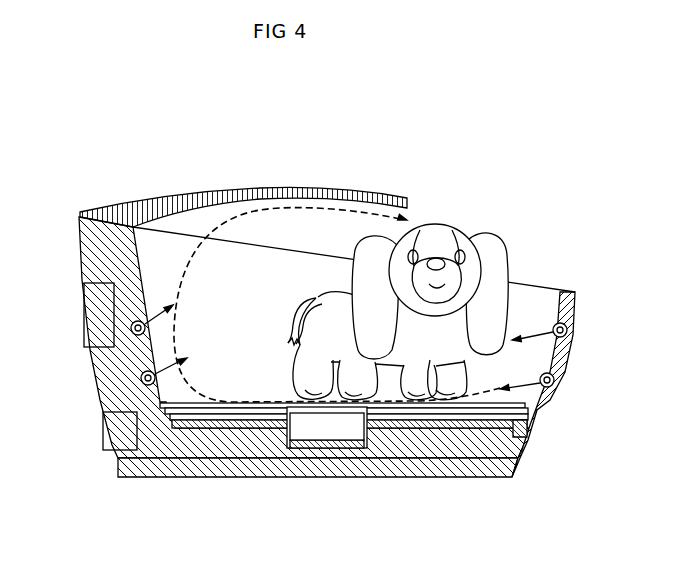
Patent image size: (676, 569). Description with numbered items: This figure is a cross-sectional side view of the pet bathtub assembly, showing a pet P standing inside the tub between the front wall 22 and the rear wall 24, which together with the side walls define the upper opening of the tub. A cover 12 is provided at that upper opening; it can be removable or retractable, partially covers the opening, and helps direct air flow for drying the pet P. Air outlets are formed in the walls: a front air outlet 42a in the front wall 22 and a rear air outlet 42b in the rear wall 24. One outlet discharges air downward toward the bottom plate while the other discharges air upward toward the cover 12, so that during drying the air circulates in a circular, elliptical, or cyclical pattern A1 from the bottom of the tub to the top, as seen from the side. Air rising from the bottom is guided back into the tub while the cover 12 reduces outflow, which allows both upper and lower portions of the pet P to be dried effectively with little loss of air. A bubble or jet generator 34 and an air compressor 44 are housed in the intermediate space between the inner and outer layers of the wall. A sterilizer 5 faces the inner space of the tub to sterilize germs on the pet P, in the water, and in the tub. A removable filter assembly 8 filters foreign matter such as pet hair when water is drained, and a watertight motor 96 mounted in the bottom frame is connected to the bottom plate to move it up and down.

The cover 12 is at (166, 197).
The cyclical air flow pattern A1 is at (302, 210).
The pet P is at (442, 219).
The rear wall 24 is at (85, 257).
The bubble or jet generator 34 is at (94, 315).
The rear air outlet 42b is at (125, 338).
The air compressor 44 is at (113, 431).
The front air outlet 42a is at (582, 331).
The front wall 22 is at (580, 361).
The sterilizer 5 is at (553, 409).
The filter assembly 8 is at (533, 450).
The motor 96 is at (341, 458).